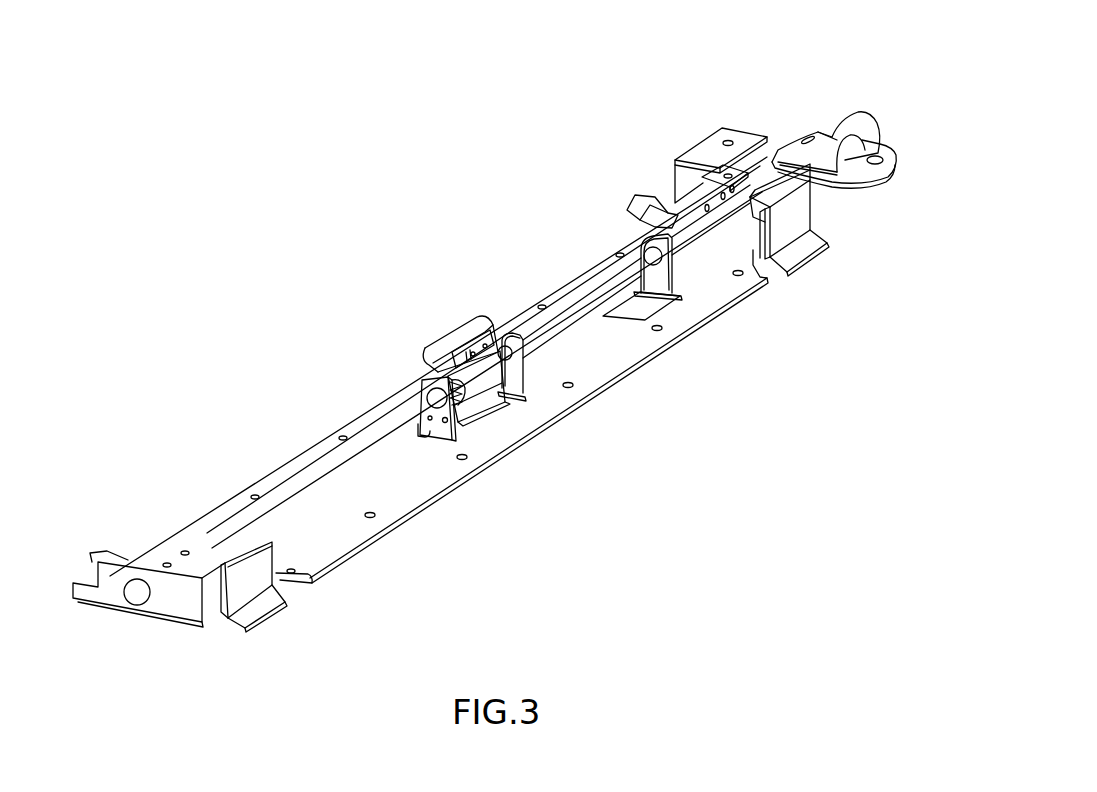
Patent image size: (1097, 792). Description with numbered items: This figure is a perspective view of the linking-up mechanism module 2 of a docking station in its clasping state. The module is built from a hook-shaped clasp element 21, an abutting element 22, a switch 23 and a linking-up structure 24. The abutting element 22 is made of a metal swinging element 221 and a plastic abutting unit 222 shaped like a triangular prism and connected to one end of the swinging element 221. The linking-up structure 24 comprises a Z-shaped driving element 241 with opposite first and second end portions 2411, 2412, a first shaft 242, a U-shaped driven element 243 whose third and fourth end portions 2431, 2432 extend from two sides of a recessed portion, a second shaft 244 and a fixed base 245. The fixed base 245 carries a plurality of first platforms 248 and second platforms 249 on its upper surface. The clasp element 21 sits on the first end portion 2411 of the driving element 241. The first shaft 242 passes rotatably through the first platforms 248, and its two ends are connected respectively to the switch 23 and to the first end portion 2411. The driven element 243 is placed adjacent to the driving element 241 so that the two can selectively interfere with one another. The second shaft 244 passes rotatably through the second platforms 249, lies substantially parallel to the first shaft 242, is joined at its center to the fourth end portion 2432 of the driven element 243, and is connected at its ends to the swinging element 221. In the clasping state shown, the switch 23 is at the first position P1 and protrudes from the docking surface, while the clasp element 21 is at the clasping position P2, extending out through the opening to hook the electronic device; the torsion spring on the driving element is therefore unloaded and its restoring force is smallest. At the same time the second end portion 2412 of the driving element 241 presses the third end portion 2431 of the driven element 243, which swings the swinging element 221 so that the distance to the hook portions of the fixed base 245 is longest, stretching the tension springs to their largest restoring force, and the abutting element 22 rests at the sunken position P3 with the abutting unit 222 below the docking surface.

The linking-up mechanism module 2 is at (250, 133).
The clasp element 21 is at (465, 330).
The abutting element 22 is at (817, 341).
The swinging element 221 is at (728, 240).
The abutting unit 222 is at (808, 272).
The switch 23 is at (847, 118).
The linking-up structure 24 is at (555, 518).
The driving element 241 is at (595, 456).
The first end portion 2411 is at (487, 350).
The second end portion 2412 is at (482, 393).
The first shaft 242 is at (570, 317).
The driven element 243 is at (433, 378).
The third end portion 2431 is at (474, 422).
The fourth end portion 2432 is at (420, 386).
The second shaft 244 is at (322, 468).
The fixed base 245 is at (308, 582).
The first platforms 248 is at (650, 205).
The second platforms 249 is at (122, 577).
The first position P1 is at (848, 115).
The clasping position P2 is at (482, 322).
The sunken position P3 is at (815, 245).